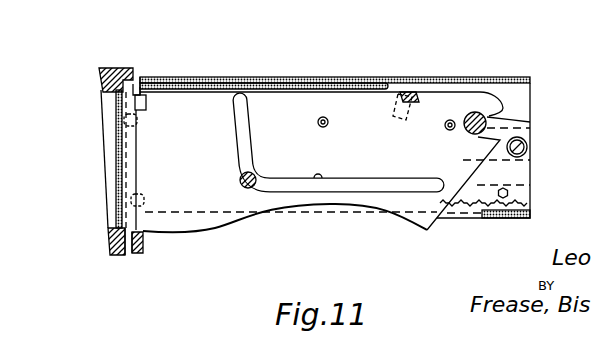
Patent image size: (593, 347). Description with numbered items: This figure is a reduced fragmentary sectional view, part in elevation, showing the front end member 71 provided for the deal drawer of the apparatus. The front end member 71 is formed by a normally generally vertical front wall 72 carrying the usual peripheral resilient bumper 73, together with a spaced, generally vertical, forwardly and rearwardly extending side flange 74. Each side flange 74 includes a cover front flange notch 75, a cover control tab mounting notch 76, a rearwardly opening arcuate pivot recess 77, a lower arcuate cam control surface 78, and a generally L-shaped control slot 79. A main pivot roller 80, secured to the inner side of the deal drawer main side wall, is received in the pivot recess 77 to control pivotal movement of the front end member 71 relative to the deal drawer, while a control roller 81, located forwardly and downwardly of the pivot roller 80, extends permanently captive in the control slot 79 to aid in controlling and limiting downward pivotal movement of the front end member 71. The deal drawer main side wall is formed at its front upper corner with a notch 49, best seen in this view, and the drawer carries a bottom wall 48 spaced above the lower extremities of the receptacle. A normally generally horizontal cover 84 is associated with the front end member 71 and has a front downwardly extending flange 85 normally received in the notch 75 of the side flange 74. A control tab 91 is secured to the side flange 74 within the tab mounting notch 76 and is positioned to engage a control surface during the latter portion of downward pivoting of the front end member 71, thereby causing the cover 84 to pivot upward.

The bottom wall 48 is at (508, 220).
The notch 49 is at (137, 92).
The front end member 71 is at (99, 186).
The front wall 72 is at (115, 102).
The peripheral resilient bumper 73 is at (99, 68).
The side flanges 74 is at (150, 158).
The cover front flange notch 75 is at (137, 114).
The cover control tab mounting notch 76 is at (416, 96).
The pivot recess 77 is at (488, 113).
The cam control surface 78 is at (204, 229).
The control slot 79 is at (319, 190).
The main pivot rollers 80 is at (488, 128).
The control rollers 81 is at (253, 175).
The cover 84 is at (222, 77).
The front downwardly extending flanges 85 is at (146, 95).
The control tabs 91 is at (407, 95).